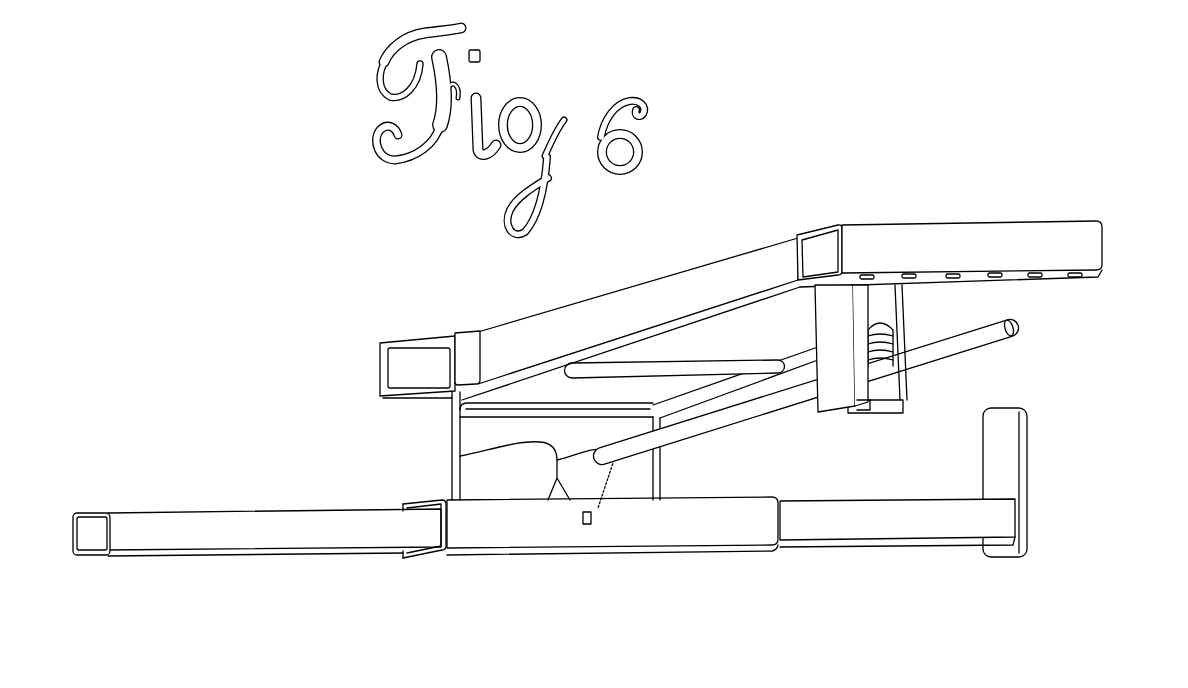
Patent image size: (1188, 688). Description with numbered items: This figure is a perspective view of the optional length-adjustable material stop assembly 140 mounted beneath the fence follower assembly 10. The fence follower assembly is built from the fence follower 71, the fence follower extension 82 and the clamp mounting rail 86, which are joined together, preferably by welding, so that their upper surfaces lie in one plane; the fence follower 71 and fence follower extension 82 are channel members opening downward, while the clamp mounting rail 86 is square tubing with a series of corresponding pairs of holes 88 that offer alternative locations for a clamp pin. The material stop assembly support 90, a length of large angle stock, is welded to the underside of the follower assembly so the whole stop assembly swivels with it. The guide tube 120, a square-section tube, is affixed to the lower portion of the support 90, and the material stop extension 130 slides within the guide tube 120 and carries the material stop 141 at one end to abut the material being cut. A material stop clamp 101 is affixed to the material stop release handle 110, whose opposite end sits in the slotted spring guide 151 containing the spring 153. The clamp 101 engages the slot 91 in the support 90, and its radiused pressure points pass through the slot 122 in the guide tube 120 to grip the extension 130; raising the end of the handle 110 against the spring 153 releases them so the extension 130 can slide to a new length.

The tire tread cutting apparatus 10 is at (613, 286).
The fence follower 71 is at (467, 333).
The fence follower extension 82 is at (680, 268).
The clamp mounting rail 86 is at (987, 221).
The holes 88 is at (1095, 276).
The material stop assembly support 90 is at (452, 427).
The slot 91 is at (460, 456).
The material stop clamp 101 is at (661, 469).
The material stop release handle 110 is at (960, 358).
The guide tube 120 is at (743, 496).
The slot 122 is at (593, 518).
The material stop extension 130 is at (173, 509).
The length-adjustable material stop assembly 140 is at (441, 477).
The material stop 141 is at (1026, 443).
The slotted spring guide 151 is at (893, 299).
The spring 153 is at (870, 328).